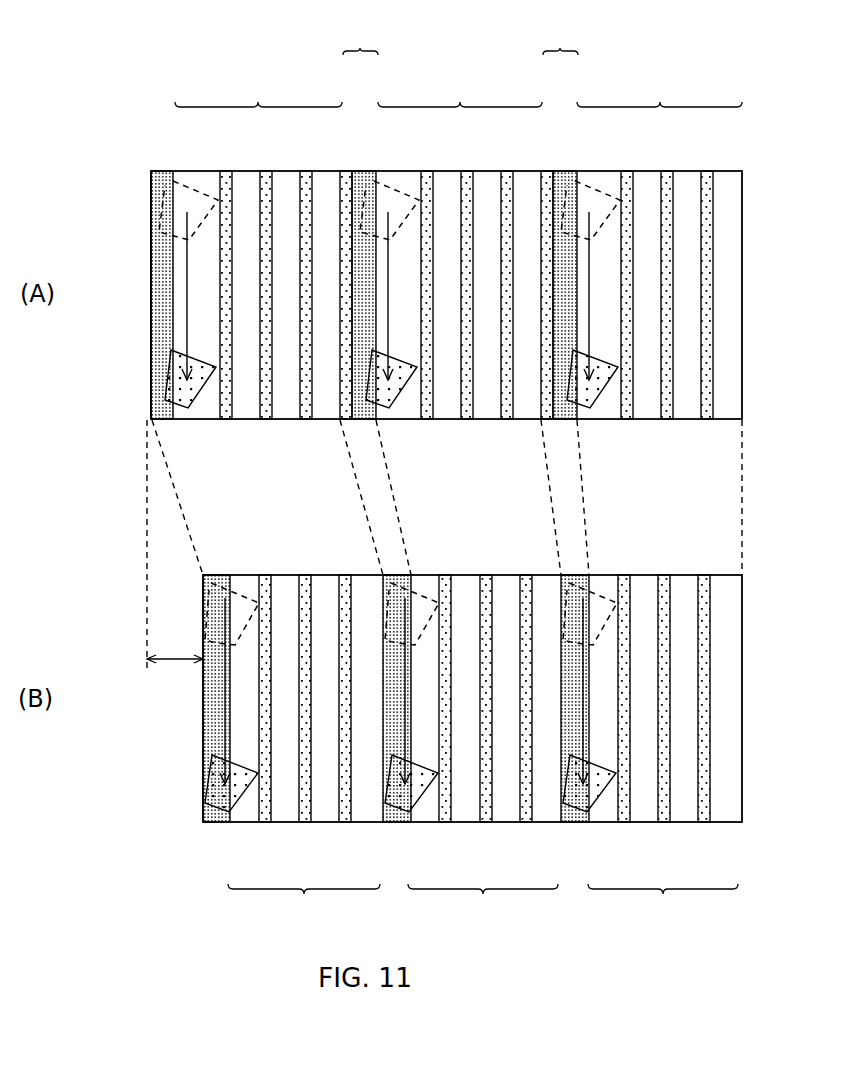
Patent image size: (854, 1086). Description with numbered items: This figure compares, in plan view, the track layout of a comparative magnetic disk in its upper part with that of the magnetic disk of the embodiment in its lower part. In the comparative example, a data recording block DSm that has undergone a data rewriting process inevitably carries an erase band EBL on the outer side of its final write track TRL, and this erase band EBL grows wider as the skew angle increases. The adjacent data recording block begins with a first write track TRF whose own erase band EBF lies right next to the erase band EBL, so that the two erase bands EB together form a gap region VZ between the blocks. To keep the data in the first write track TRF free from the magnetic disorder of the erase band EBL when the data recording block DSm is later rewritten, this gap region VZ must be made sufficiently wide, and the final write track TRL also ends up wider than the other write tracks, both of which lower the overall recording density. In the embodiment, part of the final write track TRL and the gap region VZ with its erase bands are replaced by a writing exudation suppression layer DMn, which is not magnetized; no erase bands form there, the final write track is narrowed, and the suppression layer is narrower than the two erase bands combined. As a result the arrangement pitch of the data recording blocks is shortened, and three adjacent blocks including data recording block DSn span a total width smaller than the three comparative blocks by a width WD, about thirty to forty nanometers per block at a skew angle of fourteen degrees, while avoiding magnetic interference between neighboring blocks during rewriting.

The erase band of final write track EBL is at (160, 170).
The erase band of first write track EBF is at (341, 170).
The erase band EB is at (263, 170).
The final write track TRL is at (615, 848).
The first write track TRF is at (526, 170).
The gap region VZ is at (460, 35).
The data recording block DSm is at (659, 88).
The writing exudation suppression layer DMn is at (571, 825).
The data recording block DSn is at (663, 906).
The width WD is at (175, 559).